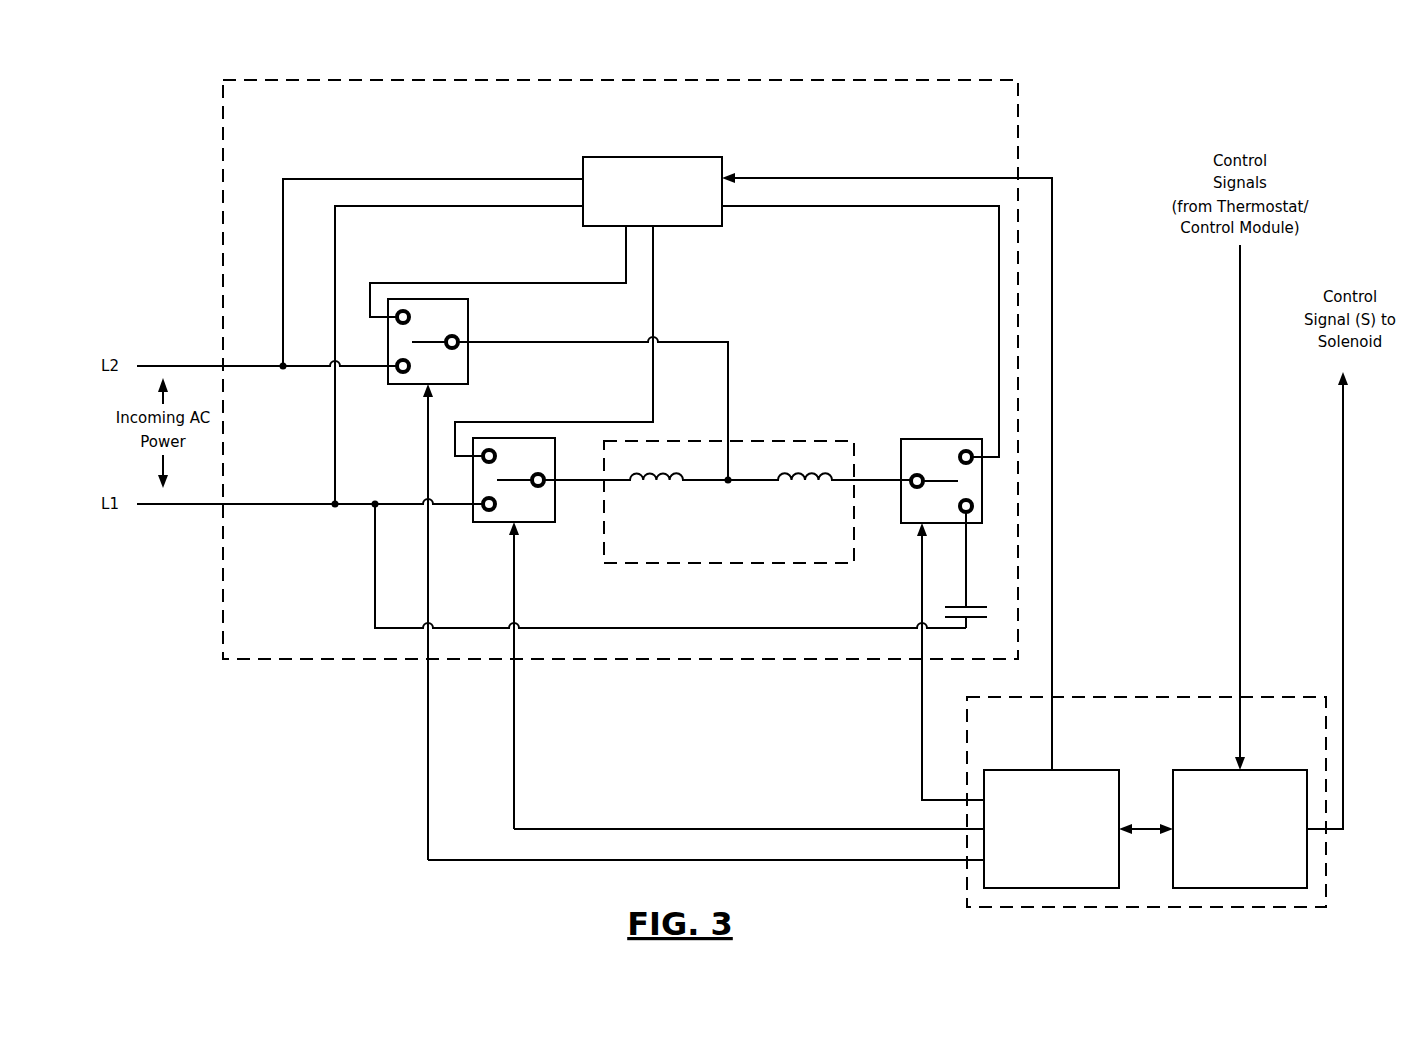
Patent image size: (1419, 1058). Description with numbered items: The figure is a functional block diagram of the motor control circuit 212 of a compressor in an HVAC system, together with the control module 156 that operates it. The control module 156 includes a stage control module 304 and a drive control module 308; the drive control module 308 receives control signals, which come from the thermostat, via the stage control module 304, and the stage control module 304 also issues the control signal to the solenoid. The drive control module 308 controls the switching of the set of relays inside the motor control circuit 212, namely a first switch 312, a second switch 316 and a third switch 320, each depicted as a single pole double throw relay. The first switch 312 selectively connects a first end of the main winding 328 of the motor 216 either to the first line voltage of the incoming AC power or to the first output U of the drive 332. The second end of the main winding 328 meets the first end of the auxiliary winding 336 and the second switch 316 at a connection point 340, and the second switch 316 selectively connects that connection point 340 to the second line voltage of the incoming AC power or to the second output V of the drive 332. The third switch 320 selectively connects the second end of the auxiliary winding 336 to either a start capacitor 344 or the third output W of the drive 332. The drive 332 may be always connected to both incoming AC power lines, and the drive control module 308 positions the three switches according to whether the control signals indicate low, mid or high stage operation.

The motor control circuit 212 is at (786, 72).
The drive 332 is at (588, 229).
The second switch 316 is at (470, 361).
The first switch 312 is at (497, 523).
The third switch 320 is at (929, 439).
The main winding 328 is at (630, 480).
The auxiliary winding 336 is at (803, 473).
The connection point 340 is at (728, 480).
The motor 216 is at (693, 564).
The start capacitor 344 is at (972, 606).
The control module 156 is at (1165, 694).
The drive control module 308 is at (1083, 889).
The stage control module 304 is at (1265, 889).